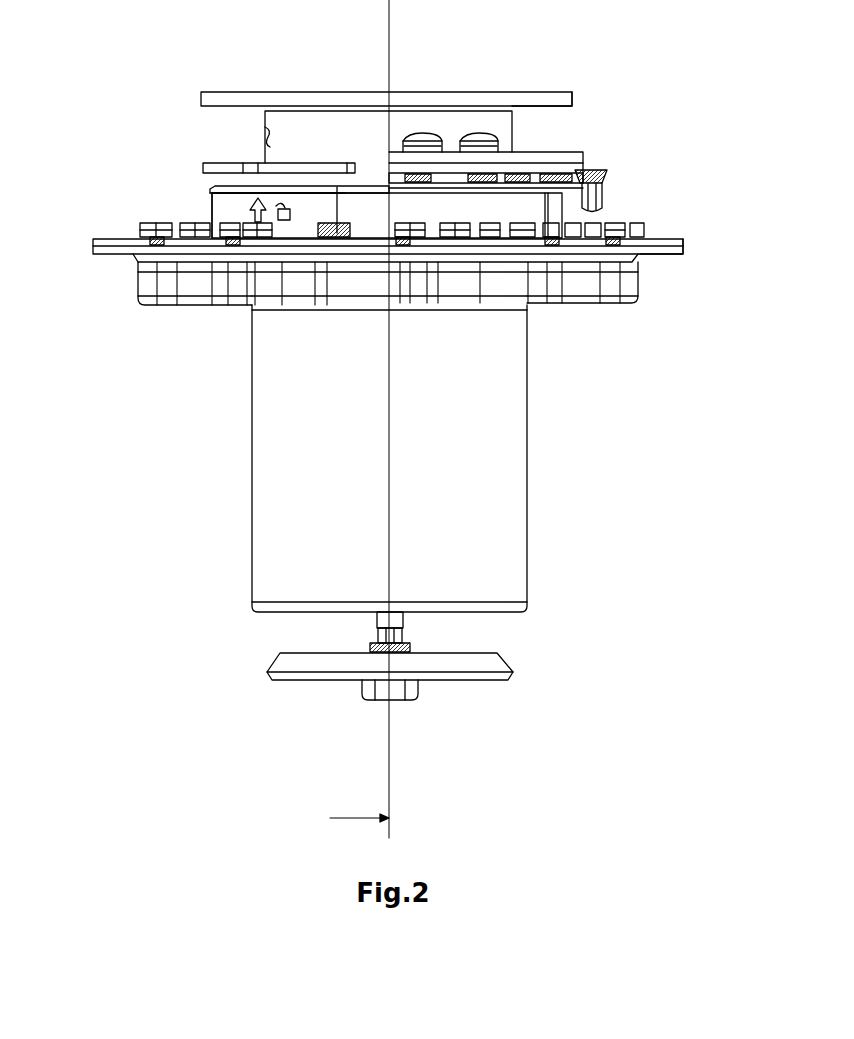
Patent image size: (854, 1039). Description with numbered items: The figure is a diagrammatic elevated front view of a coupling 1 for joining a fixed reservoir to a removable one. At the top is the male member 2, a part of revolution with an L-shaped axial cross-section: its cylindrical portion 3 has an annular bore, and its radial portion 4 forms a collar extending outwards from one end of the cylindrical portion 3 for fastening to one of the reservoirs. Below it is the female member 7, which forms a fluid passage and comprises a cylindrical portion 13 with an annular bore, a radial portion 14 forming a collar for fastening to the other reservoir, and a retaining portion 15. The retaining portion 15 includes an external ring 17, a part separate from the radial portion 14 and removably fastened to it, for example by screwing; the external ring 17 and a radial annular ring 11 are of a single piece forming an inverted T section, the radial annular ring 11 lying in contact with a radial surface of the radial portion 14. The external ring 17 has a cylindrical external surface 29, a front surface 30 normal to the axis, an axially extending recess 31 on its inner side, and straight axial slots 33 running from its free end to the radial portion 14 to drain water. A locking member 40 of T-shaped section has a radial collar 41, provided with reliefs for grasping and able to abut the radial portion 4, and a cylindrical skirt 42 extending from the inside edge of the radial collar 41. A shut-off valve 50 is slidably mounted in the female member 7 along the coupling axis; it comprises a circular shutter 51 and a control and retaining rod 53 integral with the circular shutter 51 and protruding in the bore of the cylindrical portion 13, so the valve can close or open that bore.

The coupling 1 is at (692, 132).
The male member 2 is at (576, 86).
The cylindrical portion 3 is at (333, 137).
The radial portion 4 is at (247, 92).
The female member 7 is at (690, 235).
The radial annular ring 11 is at (493, 238).
The cylindrical portion 13 is at (389, 458).
The radial portion 14 is at (112, 250).
The retaining portion 15 is at (562, 206).
The external ring 17 is at (387, 215).
The external surface 29 is at (223, 210).
The front surface 30 is at (223, 175).
The recess 31 is at (247, 187).
The slots 33 is at (344, 207).
The locking member 40 is at (587, 143).
The radial collar 41 is at (488, 152).
The cylindrical skirt 42 is at (450, 176).
The shut-off valve 50 is at (516, 680).
The circular shutter 51 is at (302, 664).
The control and retaining rod 53 is at (400, 618).